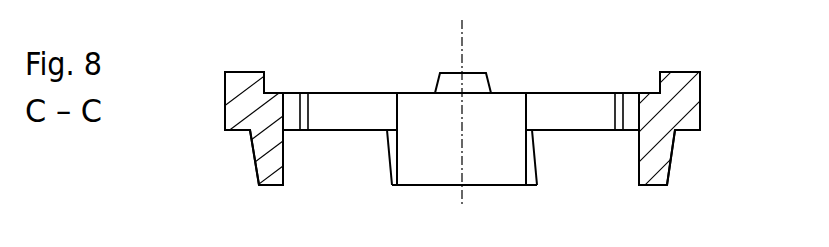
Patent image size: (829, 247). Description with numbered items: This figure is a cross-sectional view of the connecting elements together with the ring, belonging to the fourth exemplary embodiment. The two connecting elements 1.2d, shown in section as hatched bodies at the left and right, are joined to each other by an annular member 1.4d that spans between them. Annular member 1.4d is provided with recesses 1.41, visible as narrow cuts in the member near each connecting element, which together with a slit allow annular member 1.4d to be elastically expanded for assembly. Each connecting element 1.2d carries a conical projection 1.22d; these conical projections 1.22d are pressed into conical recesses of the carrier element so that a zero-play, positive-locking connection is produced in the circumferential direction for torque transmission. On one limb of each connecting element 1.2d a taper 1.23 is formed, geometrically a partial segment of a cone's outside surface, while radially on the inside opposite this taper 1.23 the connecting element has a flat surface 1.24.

The connecting element 1.2d is at (229, 109).
The conical projection 1.22d is at (243, 81).
The taper 1.23 is at (257, 165).
The flat surface 1.24 is at (283, 162).
The annular member 1.4d is at (357, 98).
The recess 1.41 is at (304, 100).